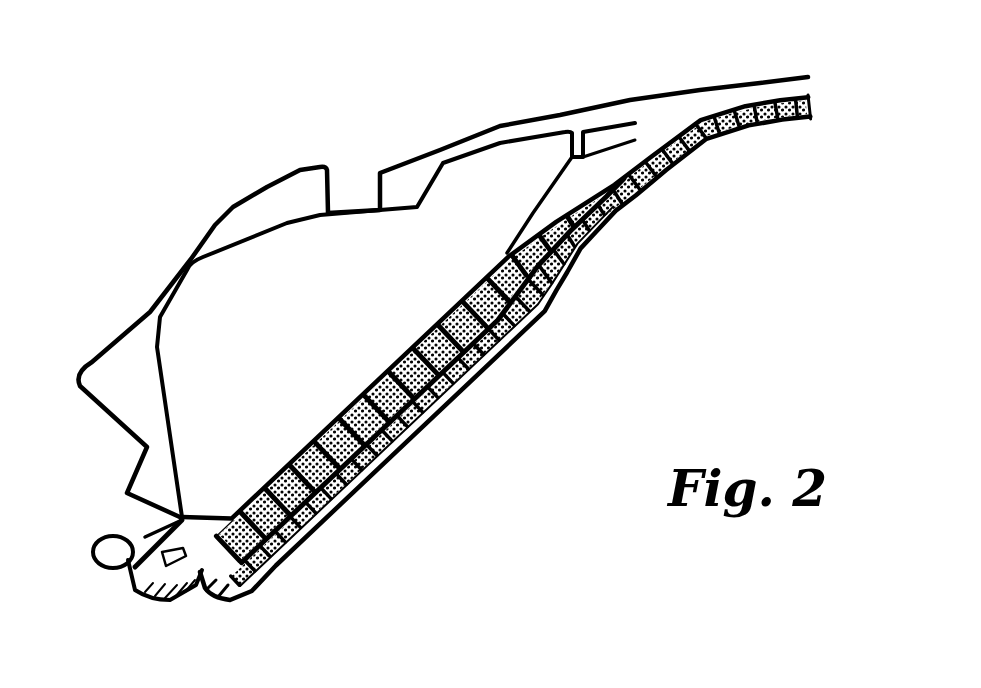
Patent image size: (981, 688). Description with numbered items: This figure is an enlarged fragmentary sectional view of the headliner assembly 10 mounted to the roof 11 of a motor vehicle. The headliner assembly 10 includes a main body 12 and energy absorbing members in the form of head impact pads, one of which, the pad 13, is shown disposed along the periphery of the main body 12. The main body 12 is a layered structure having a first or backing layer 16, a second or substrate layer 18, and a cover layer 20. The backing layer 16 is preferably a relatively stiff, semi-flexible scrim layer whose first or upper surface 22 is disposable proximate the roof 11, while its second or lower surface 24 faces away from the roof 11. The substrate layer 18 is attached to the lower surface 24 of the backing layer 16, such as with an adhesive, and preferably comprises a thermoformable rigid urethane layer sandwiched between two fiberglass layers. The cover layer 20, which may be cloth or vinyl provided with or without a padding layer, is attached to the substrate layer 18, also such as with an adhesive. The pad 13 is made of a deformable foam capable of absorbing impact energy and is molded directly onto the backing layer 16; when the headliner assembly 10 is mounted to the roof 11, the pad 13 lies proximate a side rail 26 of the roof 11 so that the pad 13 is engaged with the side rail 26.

The headliner assembly 10 is at (702, 198).
The roof 11 is at (697, 90).
The main body 12 is at (733, 133).
The head impact pad 13 is at (513, 252).
The backing layer 16 is at (335, 515).
The substrate layer 18 is at (455, 408).
The cover layer 20 is at (397, 458).
The upper surface 22 is at (347, 415).
The lower surface 24 is at (357, 488).
The side rail 26 is at (547, 137).